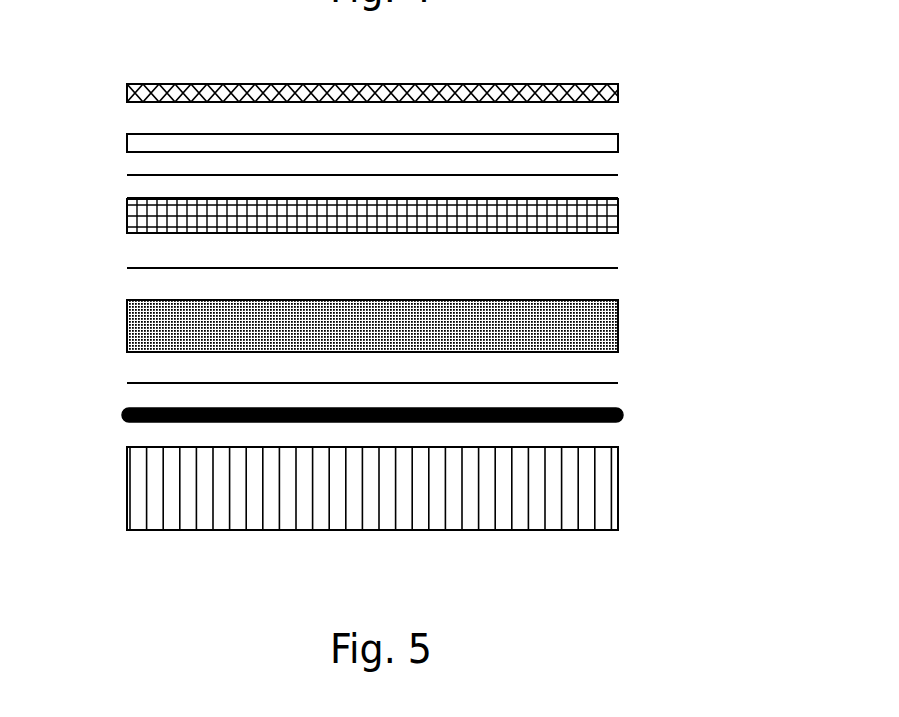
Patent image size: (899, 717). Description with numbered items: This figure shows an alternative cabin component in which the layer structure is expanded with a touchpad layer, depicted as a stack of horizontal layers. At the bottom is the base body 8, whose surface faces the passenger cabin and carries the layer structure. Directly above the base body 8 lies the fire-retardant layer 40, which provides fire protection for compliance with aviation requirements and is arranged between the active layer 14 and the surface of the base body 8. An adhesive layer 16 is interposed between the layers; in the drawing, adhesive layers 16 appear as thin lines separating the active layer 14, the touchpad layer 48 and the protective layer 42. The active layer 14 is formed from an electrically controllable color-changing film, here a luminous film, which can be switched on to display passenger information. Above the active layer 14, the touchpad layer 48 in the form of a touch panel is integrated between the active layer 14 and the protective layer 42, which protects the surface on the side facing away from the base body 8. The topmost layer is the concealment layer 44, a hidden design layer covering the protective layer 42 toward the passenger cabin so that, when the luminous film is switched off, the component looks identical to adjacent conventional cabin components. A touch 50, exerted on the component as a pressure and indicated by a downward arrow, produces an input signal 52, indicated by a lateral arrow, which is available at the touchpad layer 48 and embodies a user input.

The base body 8 is at (618, 512).
The active layer 14 is at (618, 331).
The adhesive layer 16 is at (615, 175).
The fire-retardant layer 40 is at (623, 415).
The protective layer 42 is at (618, 141).
The concealment layer 44 is at (618, 93).
The touchpad layer 48 is at (618, 214).
The touch 50 is at (548, 55).
The input signal 52 is at (127, 217).